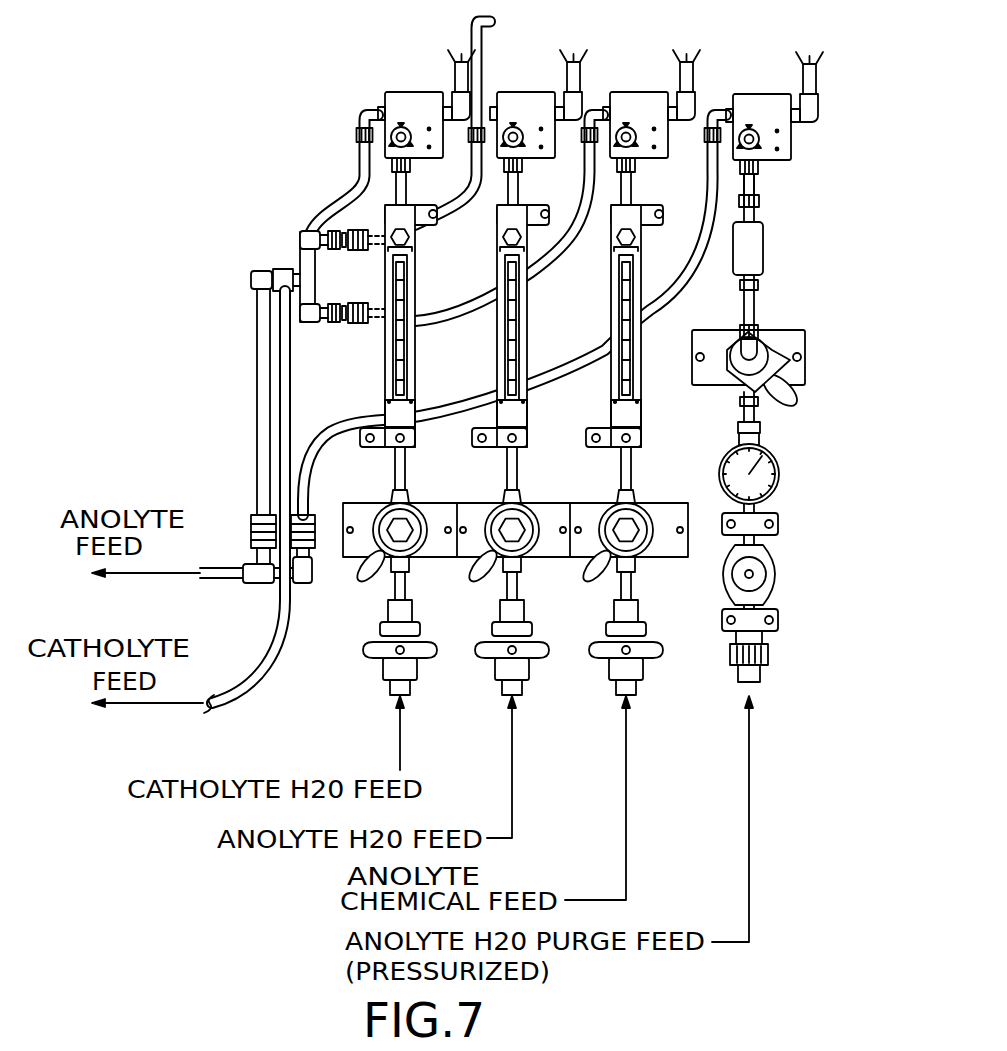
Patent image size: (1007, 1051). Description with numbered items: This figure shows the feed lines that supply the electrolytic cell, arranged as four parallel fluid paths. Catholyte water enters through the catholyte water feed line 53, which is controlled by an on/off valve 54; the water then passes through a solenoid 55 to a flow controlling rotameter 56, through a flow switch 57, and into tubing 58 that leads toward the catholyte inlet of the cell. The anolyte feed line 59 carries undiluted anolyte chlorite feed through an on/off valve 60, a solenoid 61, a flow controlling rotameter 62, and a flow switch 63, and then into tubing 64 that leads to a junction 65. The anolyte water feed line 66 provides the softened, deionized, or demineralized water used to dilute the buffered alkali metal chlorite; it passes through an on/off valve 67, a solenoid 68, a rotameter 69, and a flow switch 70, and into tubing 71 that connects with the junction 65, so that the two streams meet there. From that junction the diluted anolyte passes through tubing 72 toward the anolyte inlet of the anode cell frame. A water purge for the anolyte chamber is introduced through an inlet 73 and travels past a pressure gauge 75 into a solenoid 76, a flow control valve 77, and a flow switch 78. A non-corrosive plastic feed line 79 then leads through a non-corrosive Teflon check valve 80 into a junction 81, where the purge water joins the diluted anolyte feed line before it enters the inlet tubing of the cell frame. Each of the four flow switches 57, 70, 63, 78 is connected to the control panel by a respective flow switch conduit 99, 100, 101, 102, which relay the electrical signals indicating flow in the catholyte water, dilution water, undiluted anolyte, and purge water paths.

The catholyte water feed line 53 is at (398, 749).
The on/off valve 54 is at (386, 648).
The solenoid 55 is at (384, 537).
The flow controlling rotameter 56 is at (388, 348).
The flow switch 57 is at (394, 93).
The tubing 58 is at (188, 502).
The anolyte feed line 59 is at (624, 753).
The on/off valve 60 is at (611, 648).
The solenoid 61 is at (612, 537).
The flow controlling rotameter 62 is at (611, 325).
The flow switch 63 is at (648, 74).
The tubing 64 is at (588, 184).
The junction 65 is at (318, 276).
The anolyte water feed line 66 is at (510, 749).
The on/off valve 67 is at (497, 648).
The solenoid 68 is at (500, 537).
The rotameter 69 is at (498, 350).
The flow switch 70 is at (522, 92).
The tubing 71 is at (469, 177).
The tubing 72 is at (184, 433).
The inlet 73 is at (747, 765).
The pressure gauge 75 is at (779, 470).
The solenoid 76 is at (807, 355).
The flow control valve 77 is at (764, 258).
The flow switch 78 is at (778, 95).
The feed line 79 is at (714, 184).
The check valve 80 is at (316, 572).
The junction 81 is at (264, 594).
The flow switch conduit 99 is at (452, 59).
The flow switch conduit 100 is at (600, 51).
The flow switch conduit 101 is at (702, 68).
The flow switch conduit 102 is at (817, 85).